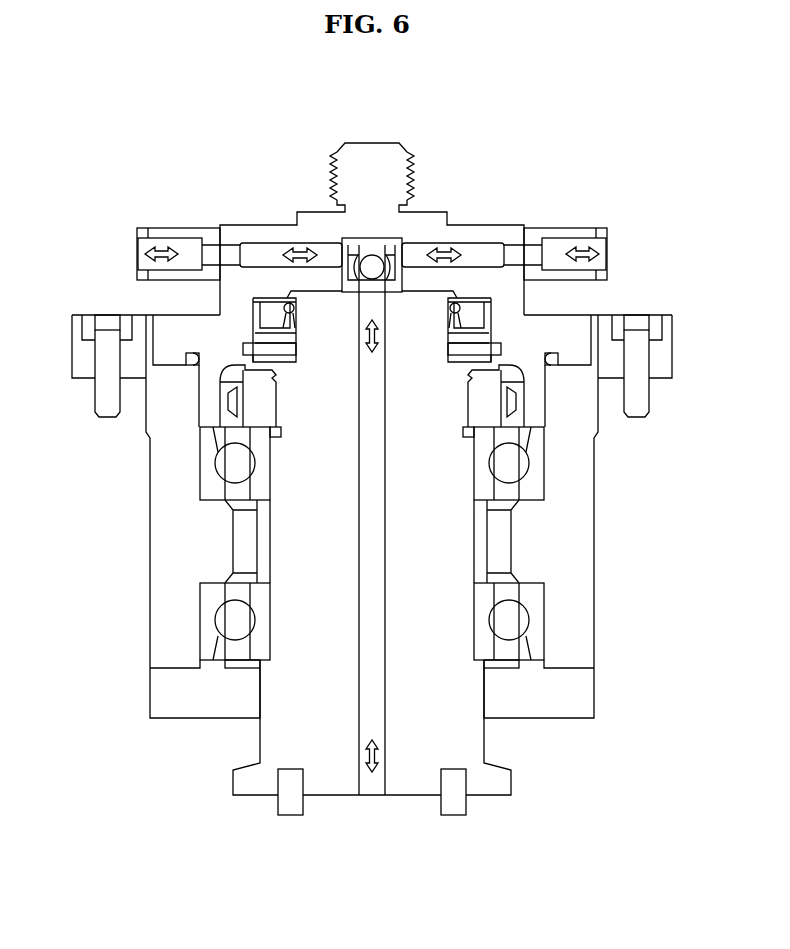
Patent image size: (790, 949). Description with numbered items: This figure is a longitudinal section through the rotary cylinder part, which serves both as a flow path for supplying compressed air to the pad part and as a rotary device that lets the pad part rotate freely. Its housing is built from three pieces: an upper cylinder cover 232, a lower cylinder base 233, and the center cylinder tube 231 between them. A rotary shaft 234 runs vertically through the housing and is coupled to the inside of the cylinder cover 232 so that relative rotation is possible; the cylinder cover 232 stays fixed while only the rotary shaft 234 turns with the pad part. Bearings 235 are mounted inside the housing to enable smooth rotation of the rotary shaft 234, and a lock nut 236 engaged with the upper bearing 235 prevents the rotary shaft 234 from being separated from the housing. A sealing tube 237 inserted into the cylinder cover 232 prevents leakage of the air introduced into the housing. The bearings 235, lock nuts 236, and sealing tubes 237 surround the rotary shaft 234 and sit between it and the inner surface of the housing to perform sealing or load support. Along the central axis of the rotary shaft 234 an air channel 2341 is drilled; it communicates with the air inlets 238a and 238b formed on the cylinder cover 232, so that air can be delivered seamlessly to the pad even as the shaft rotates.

The cylinder tube 231 is at (180, 539).
The cylinder cover 232 is at (372, 170).
The cylinder base 233 is at (150, 690).
The rotary shaft 234 is at (448, 724).
The air channel 2341 is at (374, 713).
The bearing 235 is at (532, 603).
The lock nut 236 is at (492, 402).
The sealing tube 237 is at (490, 318).
The air inlet 238a is at (608, 253).
The air inlet 238b is at (136, 253).